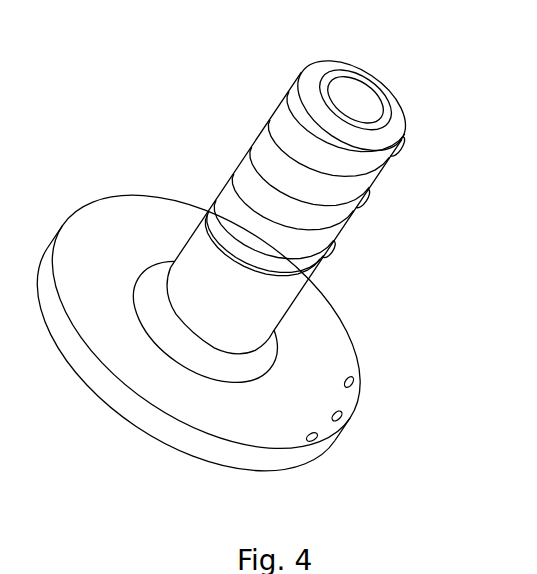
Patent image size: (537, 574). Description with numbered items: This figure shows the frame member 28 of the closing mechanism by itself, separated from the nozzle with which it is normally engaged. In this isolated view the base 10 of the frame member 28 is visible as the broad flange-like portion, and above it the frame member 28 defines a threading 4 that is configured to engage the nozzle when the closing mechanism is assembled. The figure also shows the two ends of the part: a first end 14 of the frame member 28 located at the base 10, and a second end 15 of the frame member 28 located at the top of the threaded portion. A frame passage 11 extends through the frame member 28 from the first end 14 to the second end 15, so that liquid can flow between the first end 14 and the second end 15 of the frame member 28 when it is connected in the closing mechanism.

The threading 4 is at (383, 168).
The base 10 is at (338, 433).
The frame passage 11 is at (357, 102).
The first end 14 is at (137, 433).
The second end 15 is at (365, 73).
The frame member 28 is at (380, 347).